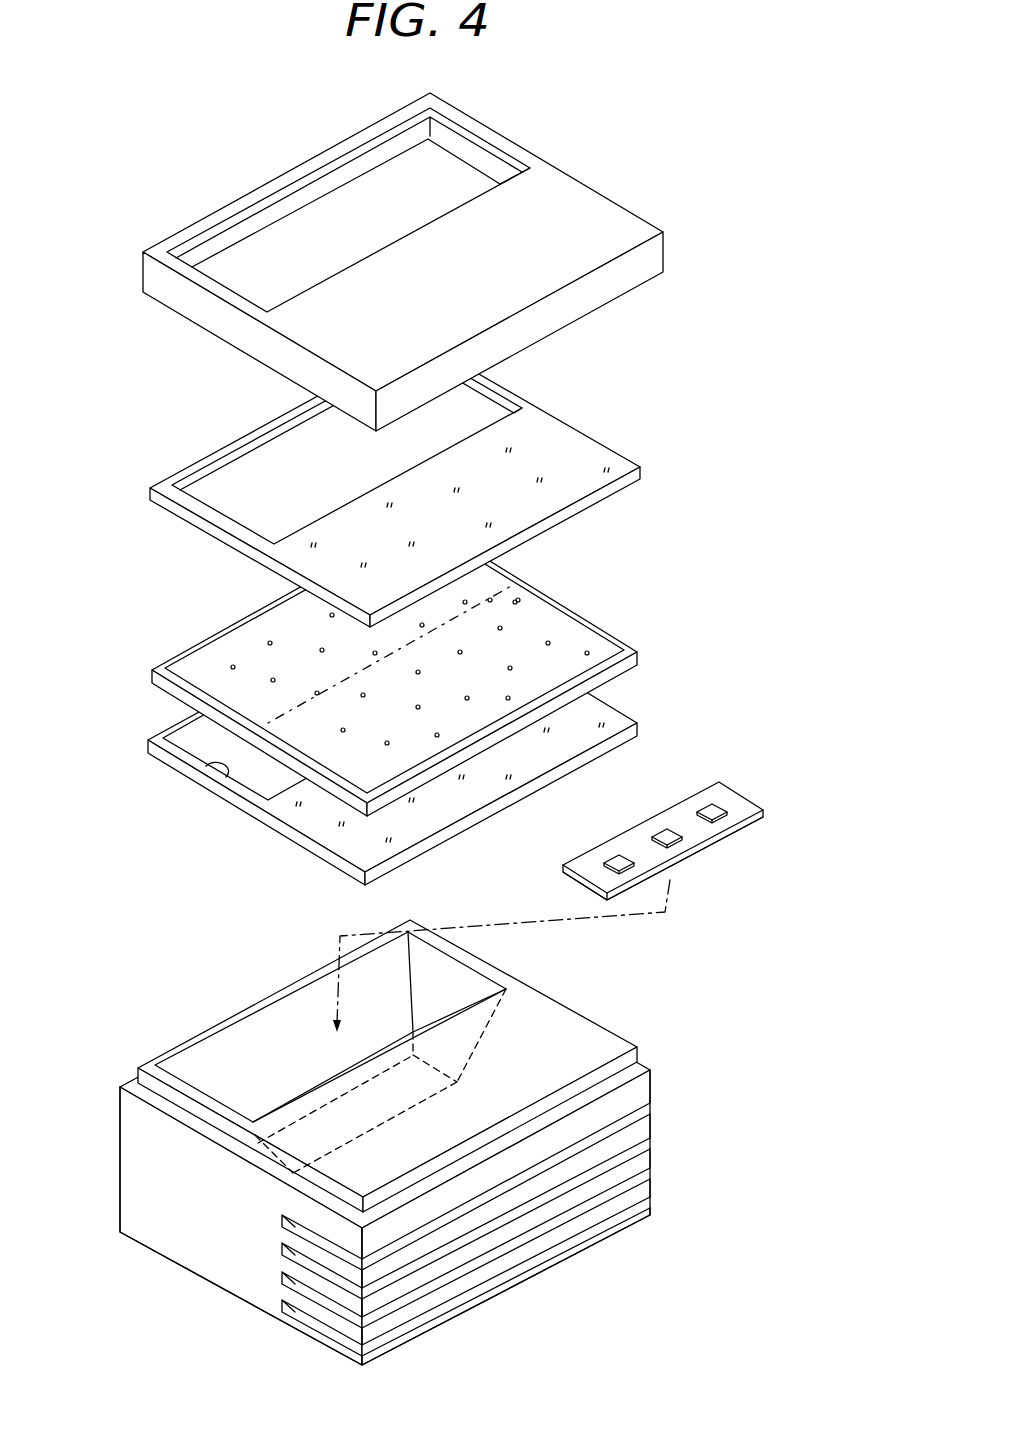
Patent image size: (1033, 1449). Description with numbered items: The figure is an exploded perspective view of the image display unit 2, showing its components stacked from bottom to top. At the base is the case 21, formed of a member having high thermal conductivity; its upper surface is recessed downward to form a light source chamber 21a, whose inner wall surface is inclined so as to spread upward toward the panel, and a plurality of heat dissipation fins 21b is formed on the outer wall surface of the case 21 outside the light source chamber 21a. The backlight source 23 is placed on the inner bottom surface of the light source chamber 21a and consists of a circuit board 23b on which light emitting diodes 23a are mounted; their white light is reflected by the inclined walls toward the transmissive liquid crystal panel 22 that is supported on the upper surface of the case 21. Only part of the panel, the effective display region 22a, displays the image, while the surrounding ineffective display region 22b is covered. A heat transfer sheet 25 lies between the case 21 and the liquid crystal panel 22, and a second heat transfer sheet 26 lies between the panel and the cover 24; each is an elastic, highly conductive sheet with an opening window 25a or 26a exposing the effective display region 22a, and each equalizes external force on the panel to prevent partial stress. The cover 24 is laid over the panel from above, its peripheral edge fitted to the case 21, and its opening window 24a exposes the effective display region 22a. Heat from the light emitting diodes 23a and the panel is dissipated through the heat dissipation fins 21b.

The image display unit 2 is at (570, 124).
The case 21 is at (421, 1142).
The light source chamber 21a is at (219, 1059).
The heat dissipation fins 21b is at (640, 1145).
The liquid crystal panel 22 is at (420, 667).
The effective display region 22a is at (223, 663).
The ineffective display region 22b is at (548, 630).
The backlight source 23 is at (561, 885).
The light emitting diode (LED) 23a is at (705, 807).
The circuit board 23b is at (703, 837).
The cover 24 is at (418, 262).
The opening window 24a is at (250, 208).
The heat transfer sheet 25 is at (421, 738).
The opening window 25a is at (213, 767).
The heat transfer sheet 26 is at (424, 483).
The opening window 26a is at (202, 473).